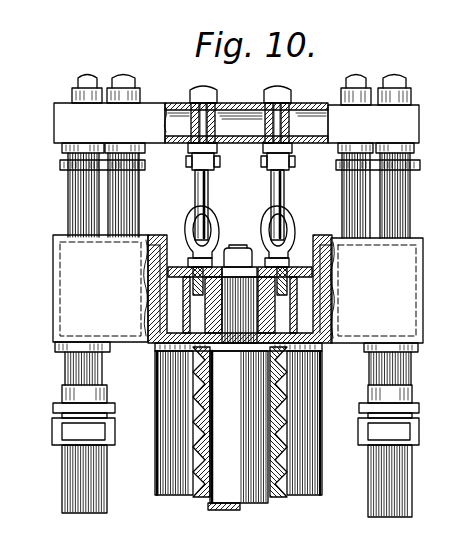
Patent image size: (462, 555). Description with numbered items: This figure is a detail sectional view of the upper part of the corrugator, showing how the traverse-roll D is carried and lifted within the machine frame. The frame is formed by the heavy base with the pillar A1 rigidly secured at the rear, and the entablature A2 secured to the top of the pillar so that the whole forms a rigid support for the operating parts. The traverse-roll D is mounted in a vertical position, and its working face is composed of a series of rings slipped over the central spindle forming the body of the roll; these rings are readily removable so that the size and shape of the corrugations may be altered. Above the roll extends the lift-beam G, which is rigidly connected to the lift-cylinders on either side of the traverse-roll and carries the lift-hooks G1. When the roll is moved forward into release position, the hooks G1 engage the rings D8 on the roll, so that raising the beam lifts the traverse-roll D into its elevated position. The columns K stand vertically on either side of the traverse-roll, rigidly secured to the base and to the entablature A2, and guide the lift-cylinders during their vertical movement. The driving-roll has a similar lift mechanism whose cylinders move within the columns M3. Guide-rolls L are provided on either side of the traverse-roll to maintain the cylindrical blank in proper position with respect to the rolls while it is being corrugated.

The lift-beam G is at (237, 123).
The lift-hooks G1 is at (274, 196).
The rings D8 is at (268, 227).
The columns M3 is at (345, 193).
The columns K is at (406, 187).
The entablature A2 is at (238, 293).
The pillar A1 is at (303, 455).
The traverse-roll D is at (197, 483).
The guide-rolls L is at (80, 467).